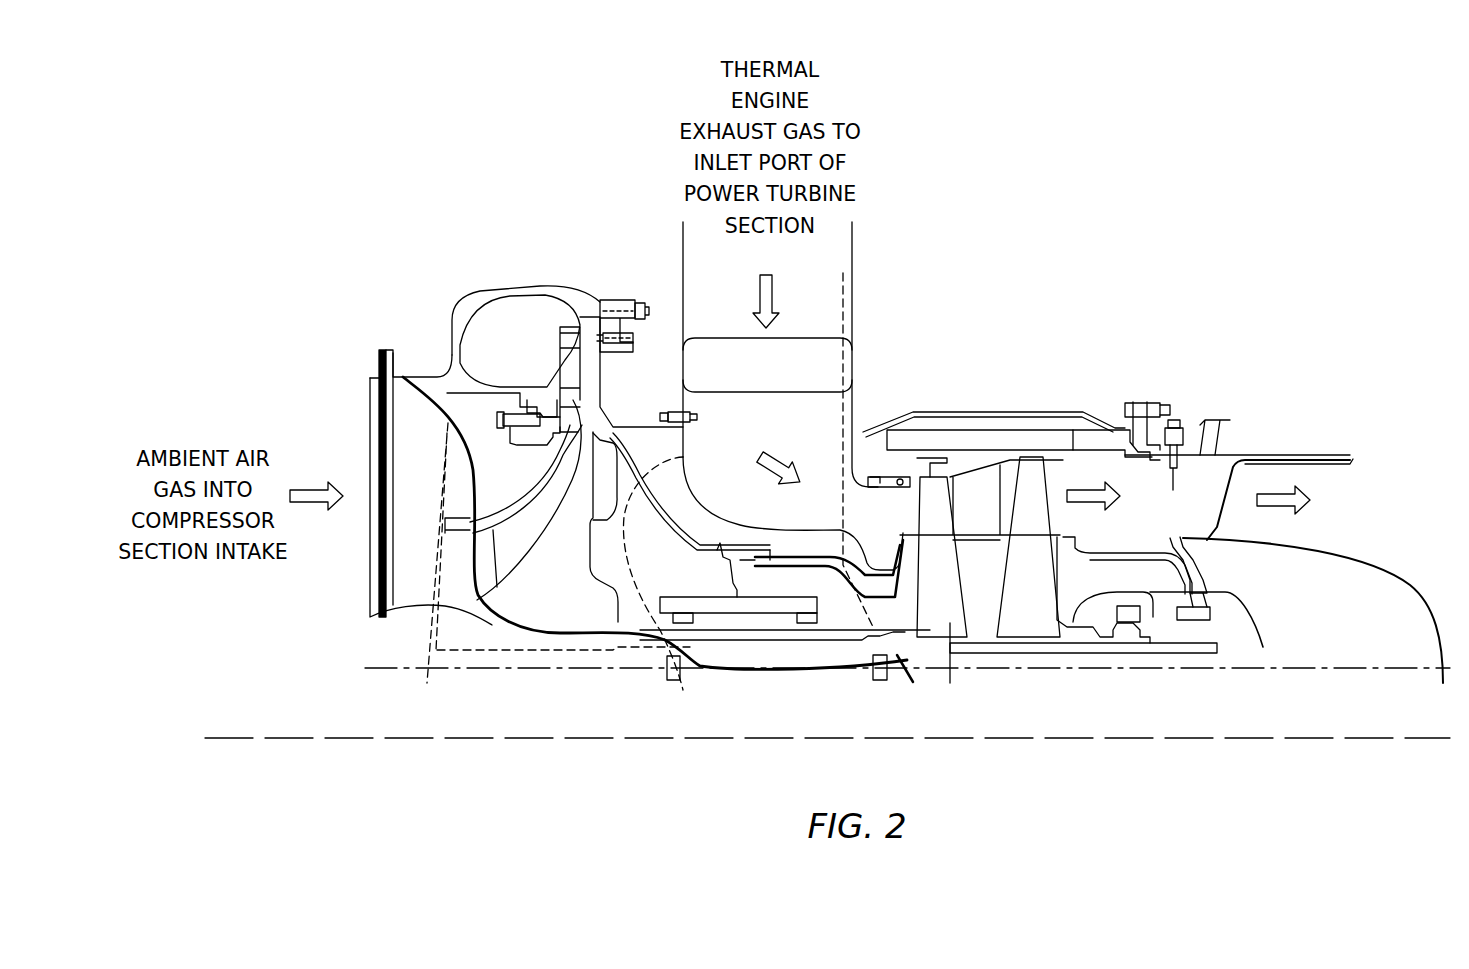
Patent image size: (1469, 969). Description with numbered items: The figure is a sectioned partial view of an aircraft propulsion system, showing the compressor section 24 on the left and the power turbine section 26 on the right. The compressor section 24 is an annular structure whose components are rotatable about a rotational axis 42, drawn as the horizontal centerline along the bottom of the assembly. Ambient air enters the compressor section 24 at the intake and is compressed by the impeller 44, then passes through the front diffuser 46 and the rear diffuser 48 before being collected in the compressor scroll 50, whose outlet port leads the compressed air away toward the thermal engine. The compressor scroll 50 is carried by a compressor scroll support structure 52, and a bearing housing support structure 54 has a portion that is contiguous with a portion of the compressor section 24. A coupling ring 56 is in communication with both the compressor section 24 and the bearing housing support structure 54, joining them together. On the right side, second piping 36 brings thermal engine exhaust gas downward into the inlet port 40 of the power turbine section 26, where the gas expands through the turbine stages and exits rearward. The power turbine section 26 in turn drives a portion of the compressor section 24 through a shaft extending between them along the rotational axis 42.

The compressor section 24 is at (615, 128).
The power turbine section 26 is at (1085, 358).
The second piping 36 is at (855, 243).
The inlet port 40 is at (857, 372).
The rotational axis 42 is at (263, 738).
The impeller 44 is at (546, 598).
The front diffuser 46 is at (548, 423).
The rear diffuser 48 is at (573, 380).
The compressor scroll 50 is at (500, 290).
The compressor scroll support structure 52 is at (601, 300).
The bearing housing support structure 54 is at (592, 383).
The coupling ring 56 is at (622, 300).